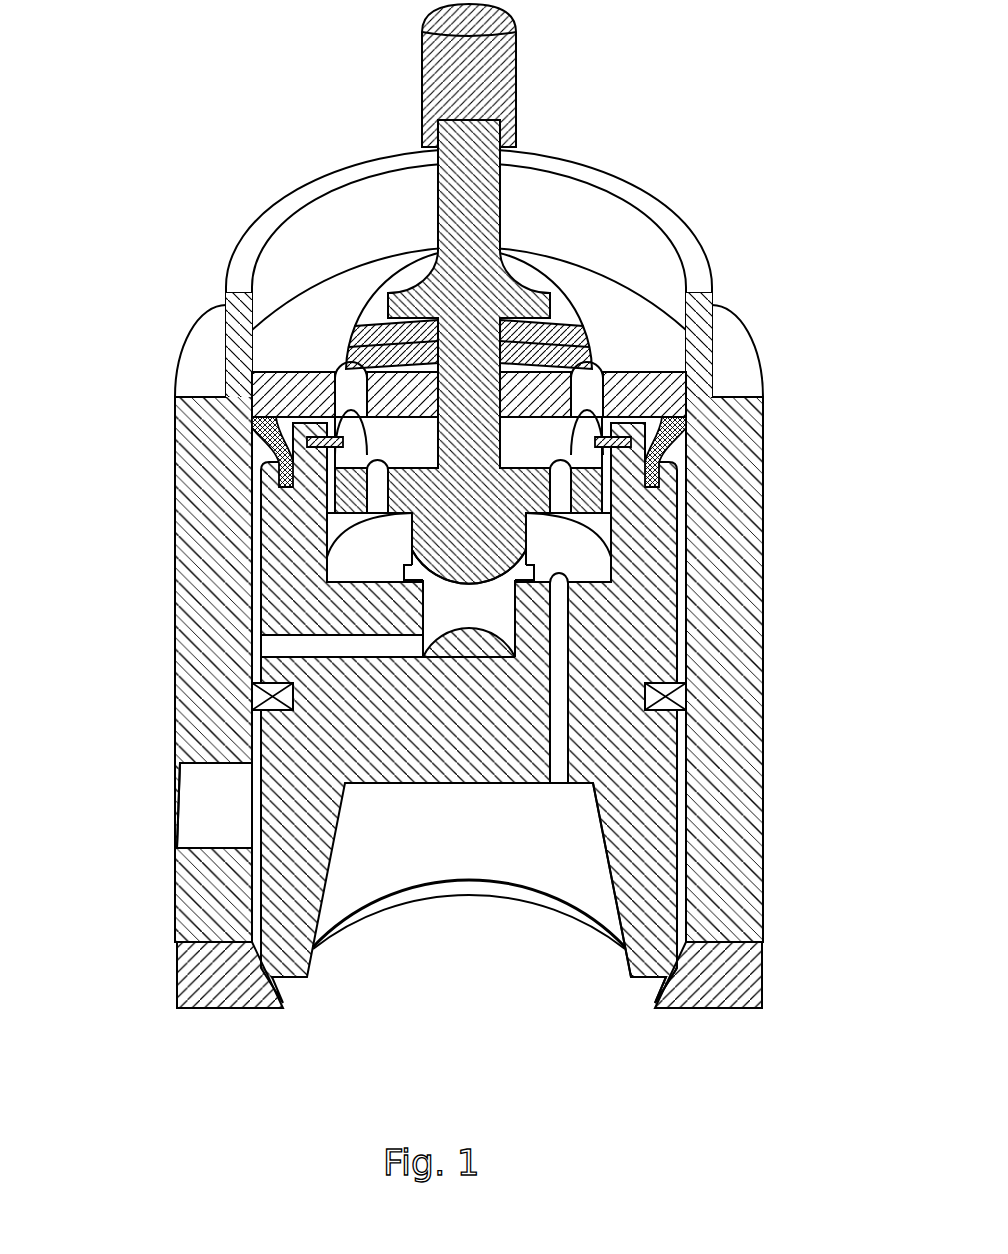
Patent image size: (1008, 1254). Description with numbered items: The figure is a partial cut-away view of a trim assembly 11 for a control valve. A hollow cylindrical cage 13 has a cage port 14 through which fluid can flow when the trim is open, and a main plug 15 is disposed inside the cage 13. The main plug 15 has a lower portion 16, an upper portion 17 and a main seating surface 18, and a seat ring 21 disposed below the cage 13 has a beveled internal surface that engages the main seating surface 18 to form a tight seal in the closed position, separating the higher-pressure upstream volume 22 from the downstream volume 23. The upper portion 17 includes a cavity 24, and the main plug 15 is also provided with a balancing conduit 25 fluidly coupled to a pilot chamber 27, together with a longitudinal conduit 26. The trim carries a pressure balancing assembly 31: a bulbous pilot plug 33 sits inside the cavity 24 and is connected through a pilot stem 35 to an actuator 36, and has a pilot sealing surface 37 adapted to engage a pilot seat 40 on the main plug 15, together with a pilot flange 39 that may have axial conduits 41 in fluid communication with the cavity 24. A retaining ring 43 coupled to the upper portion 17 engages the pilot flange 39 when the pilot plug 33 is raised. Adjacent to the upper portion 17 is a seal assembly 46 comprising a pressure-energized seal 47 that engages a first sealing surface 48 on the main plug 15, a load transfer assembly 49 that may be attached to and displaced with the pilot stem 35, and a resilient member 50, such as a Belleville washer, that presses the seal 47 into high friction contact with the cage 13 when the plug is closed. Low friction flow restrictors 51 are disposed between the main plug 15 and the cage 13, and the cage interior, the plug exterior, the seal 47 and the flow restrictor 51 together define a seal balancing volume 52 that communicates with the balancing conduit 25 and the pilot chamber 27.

The trim assembly 11 is at (382, 52).
The cage 13 is at (176, 455).
The cage port 14 is at (178, 788).
The main plug 15 is at (612, 882).
The lower portion 16 is at (477, 757).
The upper portion 17 is at (320, 553).
The main seating surface 18 is at (655, 958).
The seat ring 21 is at (700, 1012).
The upstream volume 22 is at (452, 944).
The downstream volume 23 is at (215, 815).
The cavity 24 is at (361, 563).
The balancing conduit 25 is at (263, 648).
The longitudinal conduit 26 is at (557, 775).
The pilot chamber 27 is at (454, 625).
The pressure balancing assembly 31 is at (407, 212).
The pilot plug 33 is at (454, 490).
The pilot stem 35 is at (503, 196).
The actuator 36 is at (520, 73).
The pilot sealing surface 37 is at (440, 603).
The pilot flange 39 is at (330, 508).
The pilot seat 40 is at (605, 545).
The axial conduit 41 is at (560, 461).
The retaining ring 43 is at (290, 378).
The seal assembly 46 is at (704, 235).
The seal 47 is at (252, 436).
The first sealing surface 48 is at (660, 467).
The load transfer assembly 49 is at (597, 371).
The resilient member 50 is at (354, 331).
The low friction flow restrictor 51 is at (252, 697).
The seal balancing volume 52 is at (425, 640).